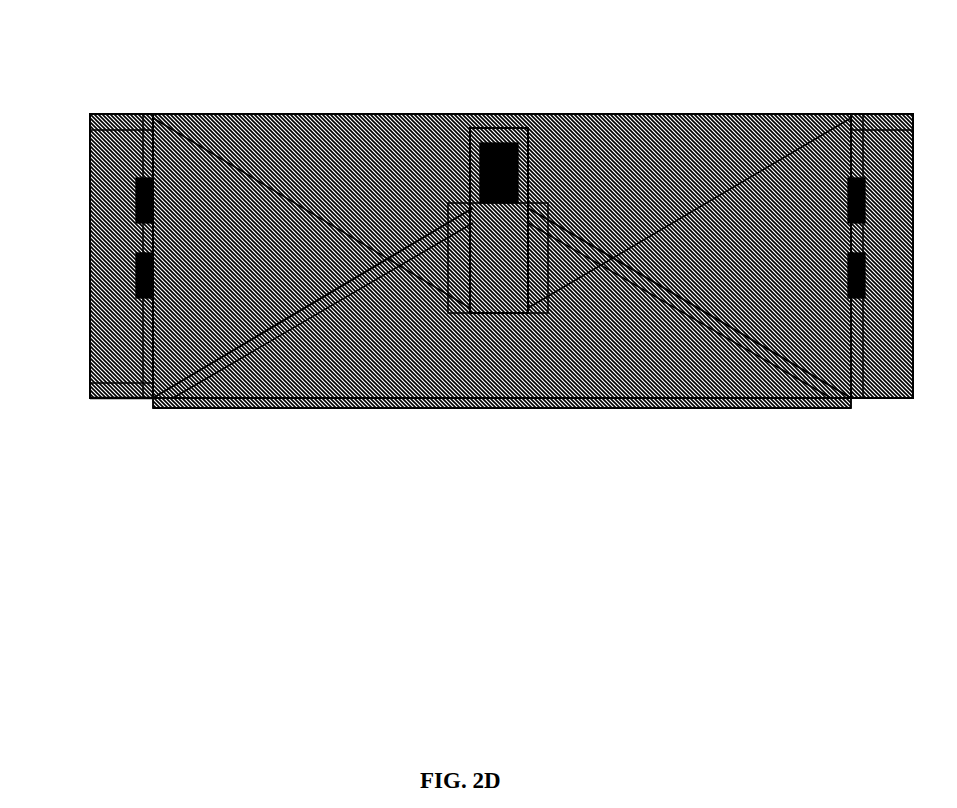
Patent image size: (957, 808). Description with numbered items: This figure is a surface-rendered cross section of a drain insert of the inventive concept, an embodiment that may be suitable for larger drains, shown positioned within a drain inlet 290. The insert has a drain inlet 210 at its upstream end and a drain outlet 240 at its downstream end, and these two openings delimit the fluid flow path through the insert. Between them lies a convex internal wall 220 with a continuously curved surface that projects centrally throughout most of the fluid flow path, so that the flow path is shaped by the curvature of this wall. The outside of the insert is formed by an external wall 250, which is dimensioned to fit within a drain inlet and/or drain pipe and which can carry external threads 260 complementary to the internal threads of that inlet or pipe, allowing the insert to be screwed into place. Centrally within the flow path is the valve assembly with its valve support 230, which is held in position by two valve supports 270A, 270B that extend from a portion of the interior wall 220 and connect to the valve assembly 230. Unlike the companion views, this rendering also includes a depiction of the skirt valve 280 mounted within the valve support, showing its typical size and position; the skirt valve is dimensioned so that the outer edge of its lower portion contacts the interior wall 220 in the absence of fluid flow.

The drain inlet 210 is at (610, 106).
The convex internal wall 220 is at (195, 106).
The valve support 230 is at (472, 106).
The drain outlet 240 is at (552, 400).
The external wall 250 is at (128, 265).
The external threads 260 is at (128, 190).
The valve support 270A is at (310, 106).
The valve support 270B is at (682, 106).
The skirt valve 280 is at (433, 398).
The drain inlet 290 is at (102, 390).